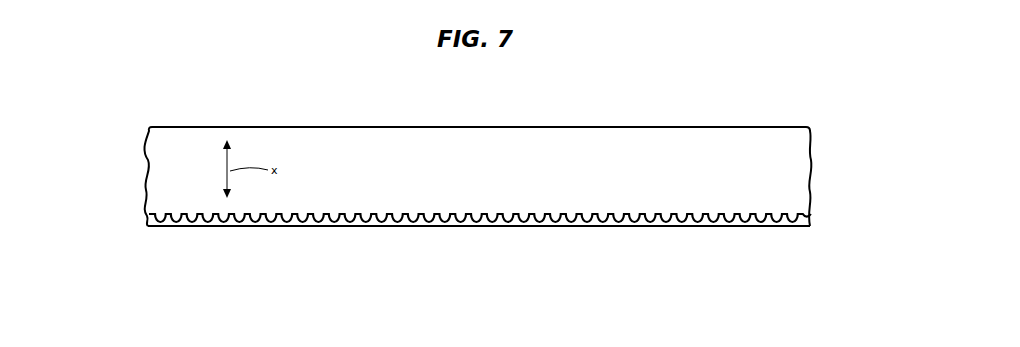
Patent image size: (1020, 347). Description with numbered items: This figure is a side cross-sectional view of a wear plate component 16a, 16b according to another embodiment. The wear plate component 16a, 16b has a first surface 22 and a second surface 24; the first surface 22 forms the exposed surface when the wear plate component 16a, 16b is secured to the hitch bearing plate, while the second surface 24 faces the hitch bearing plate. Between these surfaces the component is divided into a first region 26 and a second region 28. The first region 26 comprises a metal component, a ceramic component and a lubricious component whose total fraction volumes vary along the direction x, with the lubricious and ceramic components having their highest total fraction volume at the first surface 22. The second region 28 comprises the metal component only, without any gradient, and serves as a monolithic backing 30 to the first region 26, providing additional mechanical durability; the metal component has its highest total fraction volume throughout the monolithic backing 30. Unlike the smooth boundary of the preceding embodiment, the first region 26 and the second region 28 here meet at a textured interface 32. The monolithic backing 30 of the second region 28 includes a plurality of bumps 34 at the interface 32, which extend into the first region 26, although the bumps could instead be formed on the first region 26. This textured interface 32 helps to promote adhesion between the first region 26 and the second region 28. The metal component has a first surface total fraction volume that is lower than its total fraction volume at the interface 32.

The wear plate component 16a is at (134, 124).
The wear plate component 16b is at (422, 156).
The first surface 22 is at (620, 126).
The second surface 24 is at (693, 228).
The first region 26 is at (832, 163).
The second region 28 is at (832, 222).
The monolithic backing 30 is at (387, 228).
The interface 32 is at (640, 213).
The bumps 34 is at (335, 212).